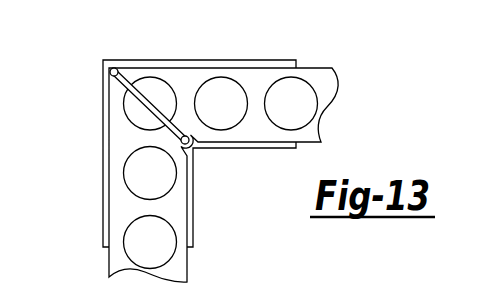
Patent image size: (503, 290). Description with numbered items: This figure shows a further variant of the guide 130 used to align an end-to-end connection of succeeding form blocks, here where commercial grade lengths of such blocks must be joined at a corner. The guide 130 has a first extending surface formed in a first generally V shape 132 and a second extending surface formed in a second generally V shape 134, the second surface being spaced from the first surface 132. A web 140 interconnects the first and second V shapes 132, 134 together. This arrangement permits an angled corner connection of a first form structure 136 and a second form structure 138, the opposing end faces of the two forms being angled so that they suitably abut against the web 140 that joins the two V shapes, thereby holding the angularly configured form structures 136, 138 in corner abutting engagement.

The guide 130 is at (182, 141).
The first extending surface in a first generally "V" shape 132 is at (104, 131).
The second extending surface in a second generally "V" shape 134 is at (194, 208).
The first form structure 136 is at (119, 202).
The second form structure 138 is at (257, 82).
The web 140 is at (150, 102).